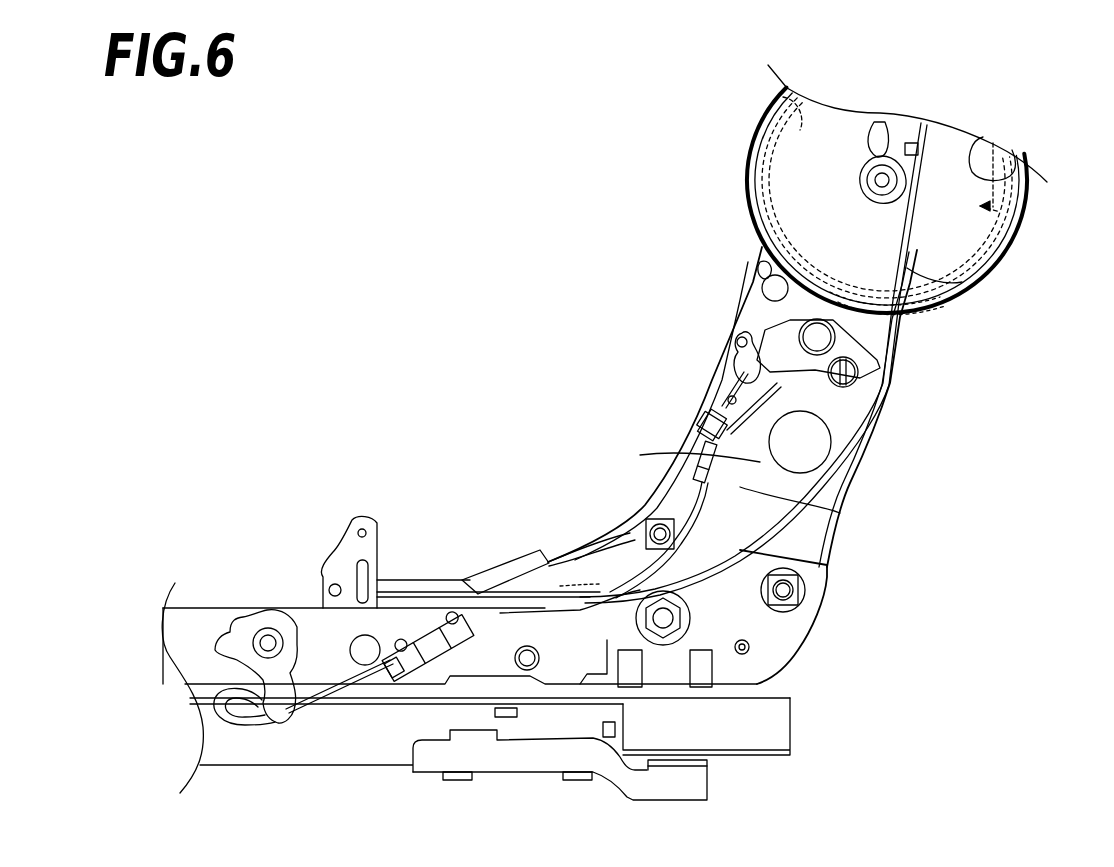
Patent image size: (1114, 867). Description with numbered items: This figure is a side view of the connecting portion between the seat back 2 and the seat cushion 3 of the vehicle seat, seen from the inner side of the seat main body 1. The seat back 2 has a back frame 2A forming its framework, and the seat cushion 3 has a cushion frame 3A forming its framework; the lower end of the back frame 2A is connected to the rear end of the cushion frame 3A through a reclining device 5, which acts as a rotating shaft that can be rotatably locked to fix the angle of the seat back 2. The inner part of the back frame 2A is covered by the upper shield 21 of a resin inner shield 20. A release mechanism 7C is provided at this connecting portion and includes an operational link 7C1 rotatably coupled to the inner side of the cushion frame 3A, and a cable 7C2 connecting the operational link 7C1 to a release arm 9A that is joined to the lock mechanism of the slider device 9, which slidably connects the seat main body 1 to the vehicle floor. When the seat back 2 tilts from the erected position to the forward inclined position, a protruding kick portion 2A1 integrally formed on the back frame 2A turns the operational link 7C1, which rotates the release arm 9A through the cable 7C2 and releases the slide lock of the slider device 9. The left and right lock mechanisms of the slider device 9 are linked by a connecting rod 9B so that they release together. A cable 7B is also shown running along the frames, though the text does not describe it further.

The seat main body 1 is at (489, 216).
The seat back 2 is at (708, 124).
The back frame 2A is at (770, 104).
The kick portion 2A1 is at (752, 228).
The reclining device 5 is at (1000, 212).
The upper shield 21 is at (962, 237).
The inner shield 20 is at (969, 276).
The cable 7B is at (907, 268).
The release mechanism 7C is at (598, 330).
The operational link 7C1 is at (762, 340).
The cable 7C2 is at (678, 450).
The seat cushion 3 is at (240, 500).
The cushion frame 3A is at (573, 560).
The slider device 9 is at (280, 748).
The release arm 9A is at (257, 705).
The connecting rod 9B is at (268, 628).